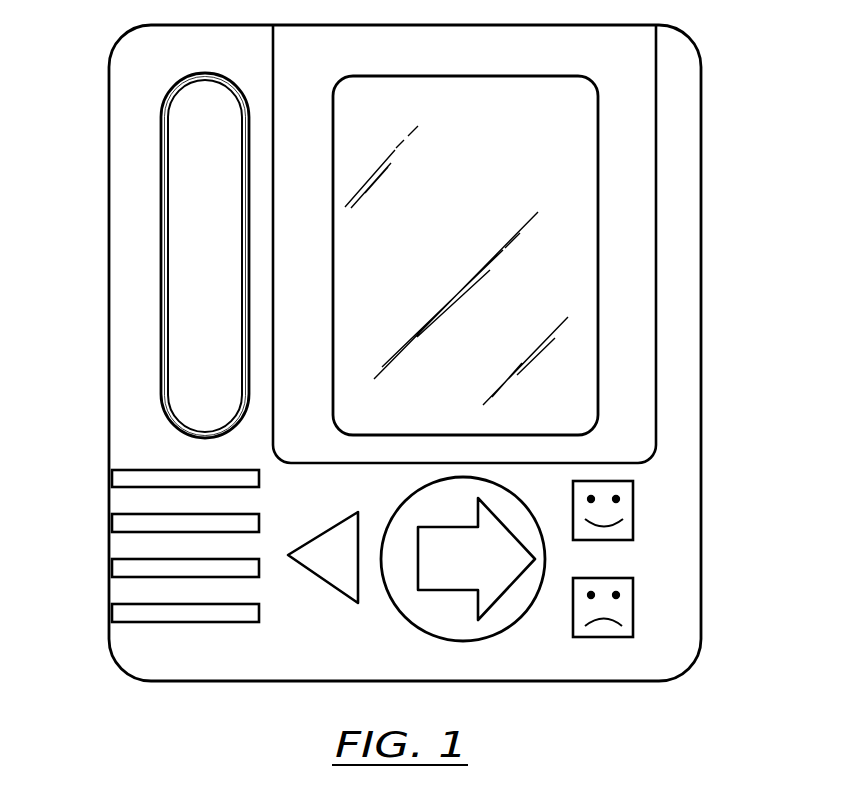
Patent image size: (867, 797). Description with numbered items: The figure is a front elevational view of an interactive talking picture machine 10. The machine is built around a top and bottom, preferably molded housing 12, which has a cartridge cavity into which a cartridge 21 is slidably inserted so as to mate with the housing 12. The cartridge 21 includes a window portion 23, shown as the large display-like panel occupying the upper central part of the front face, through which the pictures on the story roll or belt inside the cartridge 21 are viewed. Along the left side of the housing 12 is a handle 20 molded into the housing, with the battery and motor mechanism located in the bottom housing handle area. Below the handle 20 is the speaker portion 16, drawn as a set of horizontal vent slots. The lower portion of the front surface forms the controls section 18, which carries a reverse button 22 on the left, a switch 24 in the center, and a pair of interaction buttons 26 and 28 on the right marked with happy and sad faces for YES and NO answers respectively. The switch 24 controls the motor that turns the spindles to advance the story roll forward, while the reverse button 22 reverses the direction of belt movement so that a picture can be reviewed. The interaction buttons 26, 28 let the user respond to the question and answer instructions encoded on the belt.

The interactive talking picture machine 10 is at (727, 153).
The housing 12 is at (703, 284).
The speaker portion 16 is at (122, 528).
The controls section 18 is at (413, 652).
The handle 20 is at (123, 192).
The cartridge 21 is at (442, 24).
The reverse button 22 is at (346, 606).
The window portion 23 is at (486, 222).
The switch 24 is at (490, 641).
The interaction button (YES) 26 is at (633, 503).
The interaction button (NO) 28 is at (633, 605).